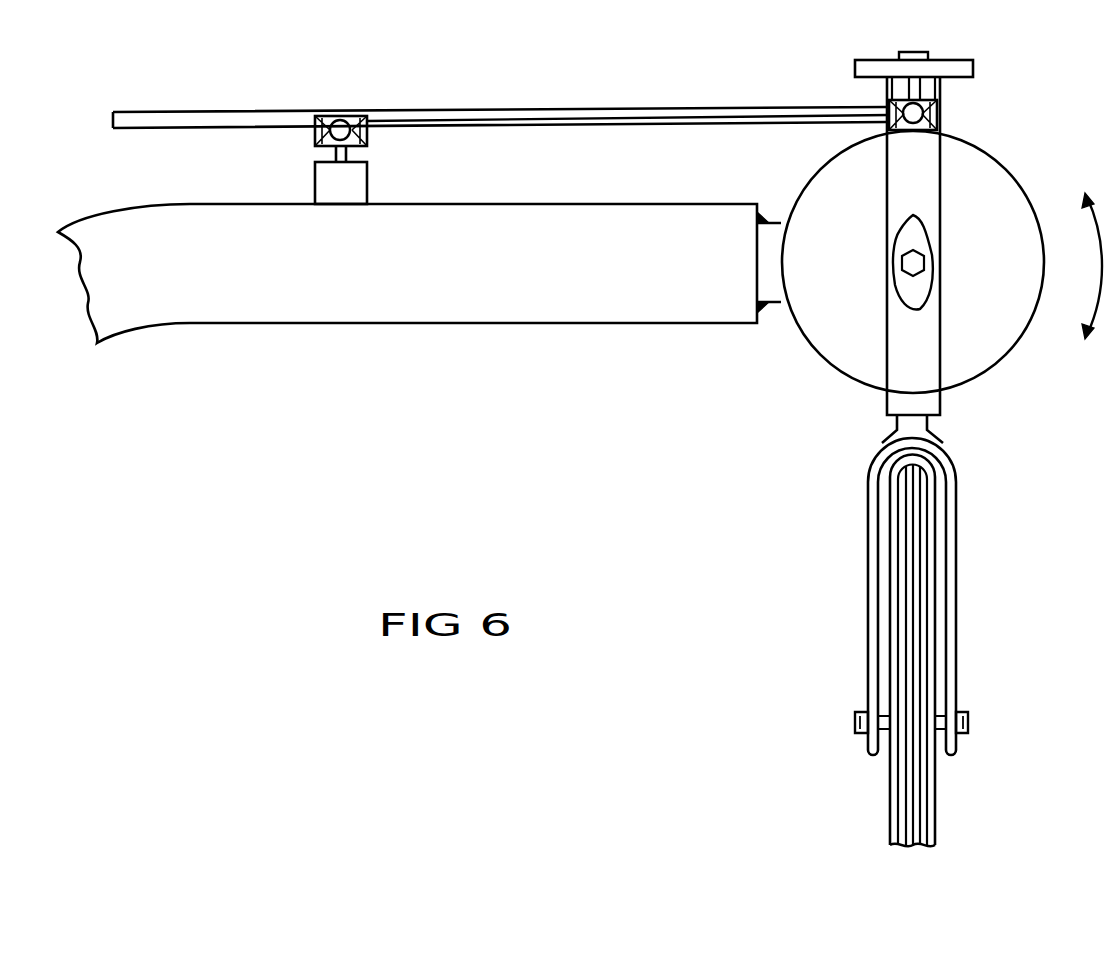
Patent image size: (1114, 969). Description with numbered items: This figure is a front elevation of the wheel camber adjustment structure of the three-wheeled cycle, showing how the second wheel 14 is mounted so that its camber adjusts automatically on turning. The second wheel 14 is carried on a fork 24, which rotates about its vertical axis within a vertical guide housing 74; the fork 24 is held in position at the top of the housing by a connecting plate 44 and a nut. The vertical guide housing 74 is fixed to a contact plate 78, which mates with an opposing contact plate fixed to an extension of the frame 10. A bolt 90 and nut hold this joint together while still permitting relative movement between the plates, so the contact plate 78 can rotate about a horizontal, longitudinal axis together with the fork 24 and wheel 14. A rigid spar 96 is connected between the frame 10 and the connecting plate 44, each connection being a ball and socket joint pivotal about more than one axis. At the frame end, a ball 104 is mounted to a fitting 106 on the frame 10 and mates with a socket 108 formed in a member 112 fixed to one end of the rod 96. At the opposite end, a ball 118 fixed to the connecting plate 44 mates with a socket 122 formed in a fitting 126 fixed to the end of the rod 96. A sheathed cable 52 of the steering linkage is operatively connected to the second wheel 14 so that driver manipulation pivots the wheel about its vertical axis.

The frame 10 is at (518, 323).
The second wheel 14 is at (935, 803).
The fork 24 is at (957, 480).
The connecting plate 44 is at (963, 60).
The sheathed cable 52 is at (228, 110).
The vertical guide housing 74 is at (932, 378).
The contact plate 78 is at (870, 377).
The bolt 90 is at (910, 288).
The rigid spar 96 is at (505, 121).
The ball 104 is at (318, 138).
The fitting 106 is at (367, 183).
The socket 108 is at (340, 123).
The member 112 is at (368, 128).
The ball 118 is at (925, 103).
The socket 122 is at (940, 127).
The fitting 126 is at (889, 108).